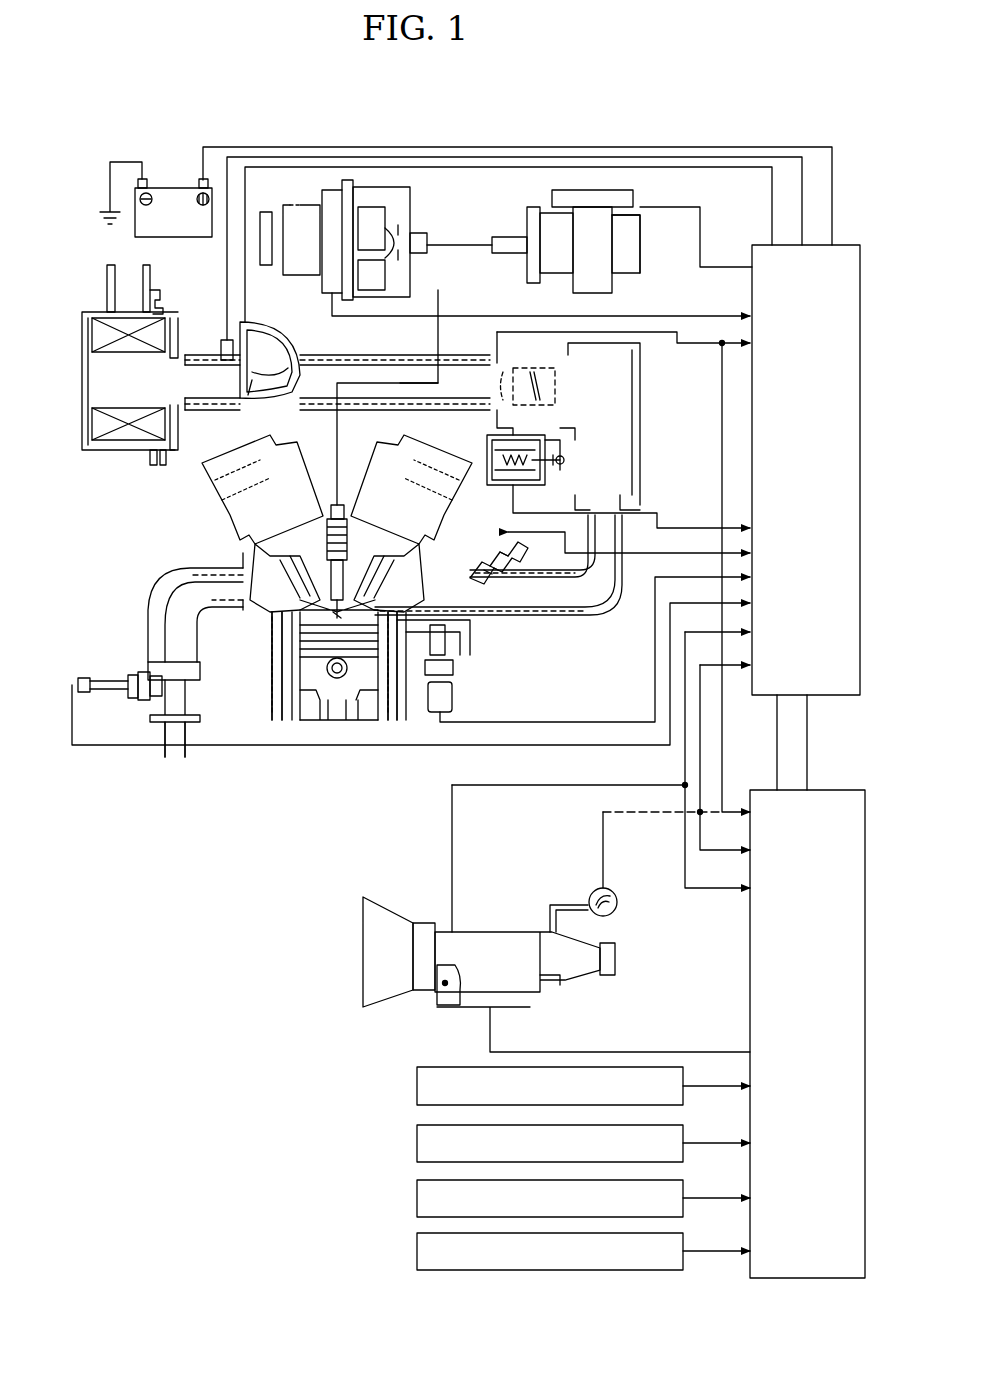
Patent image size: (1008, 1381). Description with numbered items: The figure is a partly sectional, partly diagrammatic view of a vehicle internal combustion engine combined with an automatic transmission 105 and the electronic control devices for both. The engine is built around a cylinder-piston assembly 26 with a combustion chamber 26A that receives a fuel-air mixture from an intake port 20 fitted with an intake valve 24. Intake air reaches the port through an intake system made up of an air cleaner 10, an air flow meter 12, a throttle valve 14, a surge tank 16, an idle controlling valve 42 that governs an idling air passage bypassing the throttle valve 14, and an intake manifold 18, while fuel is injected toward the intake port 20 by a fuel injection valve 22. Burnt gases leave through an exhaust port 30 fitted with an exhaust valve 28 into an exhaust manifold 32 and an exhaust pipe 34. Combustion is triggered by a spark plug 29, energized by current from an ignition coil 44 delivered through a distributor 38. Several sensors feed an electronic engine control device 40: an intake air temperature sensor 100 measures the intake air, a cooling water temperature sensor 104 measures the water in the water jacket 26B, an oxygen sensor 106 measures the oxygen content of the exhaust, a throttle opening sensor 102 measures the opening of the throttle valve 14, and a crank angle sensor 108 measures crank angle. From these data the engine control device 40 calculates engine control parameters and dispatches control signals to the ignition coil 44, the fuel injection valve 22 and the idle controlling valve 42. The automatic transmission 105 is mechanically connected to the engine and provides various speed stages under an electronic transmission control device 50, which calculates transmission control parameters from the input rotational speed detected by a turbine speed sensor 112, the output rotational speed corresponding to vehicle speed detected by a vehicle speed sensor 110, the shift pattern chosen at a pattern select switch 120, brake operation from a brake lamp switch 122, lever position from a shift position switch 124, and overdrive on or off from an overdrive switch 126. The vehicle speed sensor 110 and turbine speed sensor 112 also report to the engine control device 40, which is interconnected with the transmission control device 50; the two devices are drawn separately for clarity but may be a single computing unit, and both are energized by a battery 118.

The air cleaner 10 is at (84, 372).
The air flow meter 12 is at (288, 336).
The throttle valve 14 is at (560, 373).
The surge tank 16 is at (623, 421).
The intake manifold 18 is at (492, 605).
The intake port 20 is at (415, 560).
The fuel injection valve 22 is at (515, 557).
The intake valve 24 is at (375, 600).
The cylinder-piston assembly 26 is at (265, 702).
The combustion chamber 26A is at (268, 635).
The water jacket 26B is at (393, 698).
The exhaust valve 28 is at (300, 600).
The spark plug 29 is at (333, 518).
The exhaust port 30 is at (270, 552).
The exhaust manifold 32 is at (175, 590).
The exhaust pipe 34 is at (165, 752).
The distributor 38 is at (301, 215).
The electronic engine control device 40 is at (860, 645).
The idle controlling valve 42 is at (490, 470).
The ignition coil 44 is at (635, 240).
The electronic transmission control device 50 is at (865, 1153).
The intake air temperature sensor 100 is at (222, 342).
The throttle opening sensor 102 is at (490, 350).
The cooling water temperature sensor 104 is at (455, 660).
The automatic transmission 105 is at (497, 945).
The oxygen sensor 106 is at (155, 667).
The crank angle sensor 108 is at (332, 315).
The vehicle speed sensor 110 is at (620, 908).
The turbine speed sensor 112 is at (455, 990).
The battery 118 is at (171, 185).
The pattern select switch 120 is at (410, 1088).
The brake lamp switch 122 is at (410, 1144).
The shift position switch 124 is at (410, 1199).
The overdrive switch 126 is at (410, 1253).